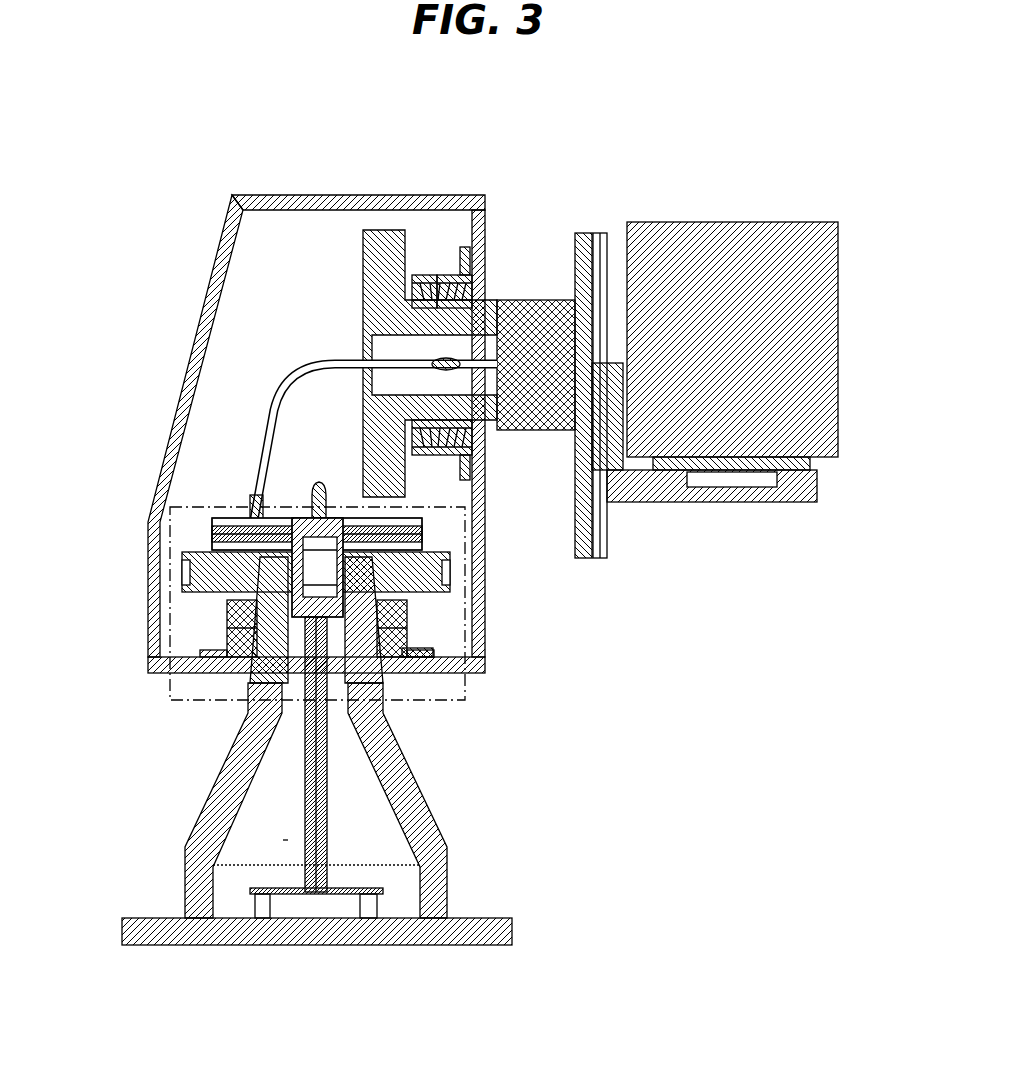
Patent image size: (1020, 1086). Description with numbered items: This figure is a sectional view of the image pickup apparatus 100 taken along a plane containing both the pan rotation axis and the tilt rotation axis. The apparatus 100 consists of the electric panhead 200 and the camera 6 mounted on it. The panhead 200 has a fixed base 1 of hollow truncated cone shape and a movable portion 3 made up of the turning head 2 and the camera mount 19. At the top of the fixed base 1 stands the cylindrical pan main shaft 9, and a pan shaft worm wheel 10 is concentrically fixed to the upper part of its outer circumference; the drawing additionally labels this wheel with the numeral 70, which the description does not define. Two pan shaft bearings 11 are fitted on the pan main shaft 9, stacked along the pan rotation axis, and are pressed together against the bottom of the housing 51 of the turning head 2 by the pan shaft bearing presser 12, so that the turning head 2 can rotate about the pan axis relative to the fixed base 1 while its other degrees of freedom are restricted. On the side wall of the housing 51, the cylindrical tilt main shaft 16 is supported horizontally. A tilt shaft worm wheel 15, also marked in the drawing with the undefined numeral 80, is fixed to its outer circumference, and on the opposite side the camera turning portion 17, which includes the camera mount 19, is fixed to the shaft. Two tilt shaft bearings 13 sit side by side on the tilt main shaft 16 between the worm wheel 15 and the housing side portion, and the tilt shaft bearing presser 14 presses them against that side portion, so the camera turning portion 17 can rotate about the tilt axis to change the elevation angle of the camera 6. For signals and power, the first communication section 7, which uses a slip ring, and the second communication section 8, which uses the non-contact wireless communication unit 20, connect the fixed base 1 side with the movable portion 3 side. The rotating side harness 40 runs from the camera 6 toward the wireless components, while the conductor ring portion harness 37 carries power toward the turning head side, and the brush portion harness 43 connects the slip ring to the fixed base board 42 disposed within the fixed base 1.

The image pickup apparatus 100 is at (855, 138).
The panhead 200 is at (136, 373).
The fixed base 1 is at (205, 828).
The turning head 2 is at (369, 445).
The movable portion 3 is at (233, 308).
The camera 6 is at (783, 236).
The first communication section 7 is at (290, 848).
The second communication section 8 is at (200, 477).
The pan main shaft 9 is at (250, 683).
The pan shaft worm wheel 10 is at (230, 572).
The rotating body 70 is at (212, 567).
The pan shaft bearings 11 is at (233, 645).
The pan shaft bearing presser 12 is at (228, 612).
The tilt shaft bearings 13 is at (462, 292).
The tilt shaft bearing presser 14 is at (437, 450).
The tilt shaft worm wheel 15 is at (505, 413).
The support member 80 is at (390, 473).
The tilt main shaft 16 is at (437, 320).
The camera turning portion 17 is at (437, 290).
The camera mount 19 is at (790, 487).
The wireless communication unit 20 is at (186, 518).
The conductor ring portion harness 37 is at (319, 490).
The rotating side harness 40 is at (277, 408).
The fixed base board 42 is at (367, 891).
The brush portion harness 43 is at (323, 758).
The housing 51 is at (497, 628).